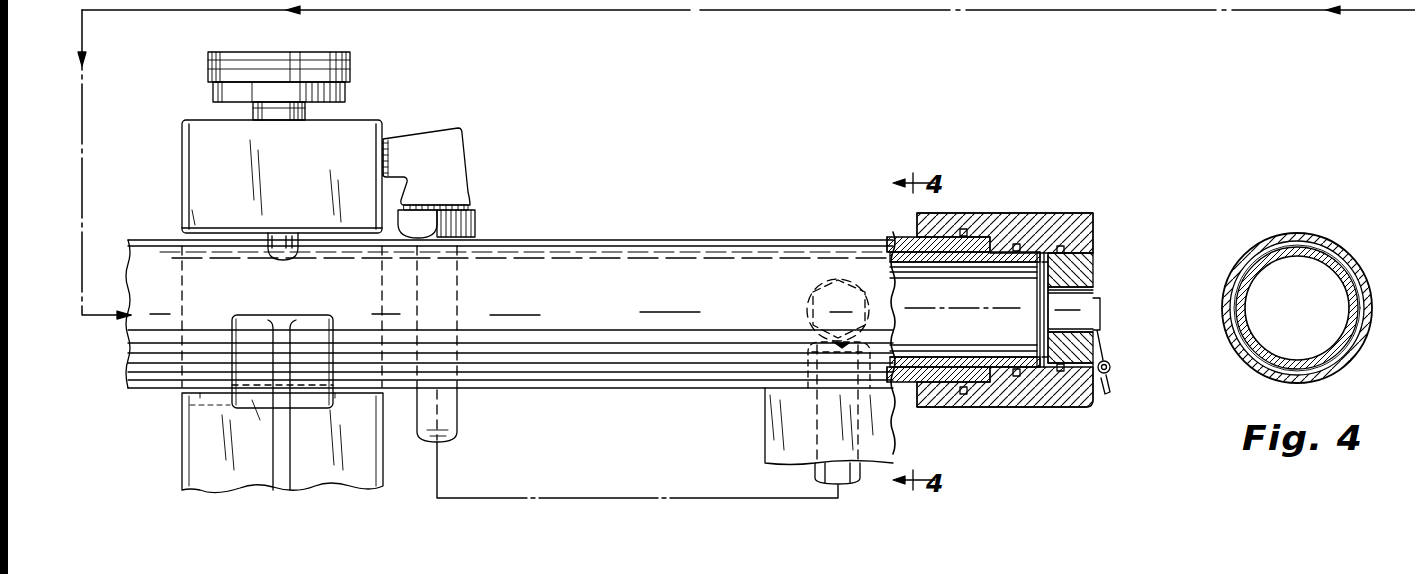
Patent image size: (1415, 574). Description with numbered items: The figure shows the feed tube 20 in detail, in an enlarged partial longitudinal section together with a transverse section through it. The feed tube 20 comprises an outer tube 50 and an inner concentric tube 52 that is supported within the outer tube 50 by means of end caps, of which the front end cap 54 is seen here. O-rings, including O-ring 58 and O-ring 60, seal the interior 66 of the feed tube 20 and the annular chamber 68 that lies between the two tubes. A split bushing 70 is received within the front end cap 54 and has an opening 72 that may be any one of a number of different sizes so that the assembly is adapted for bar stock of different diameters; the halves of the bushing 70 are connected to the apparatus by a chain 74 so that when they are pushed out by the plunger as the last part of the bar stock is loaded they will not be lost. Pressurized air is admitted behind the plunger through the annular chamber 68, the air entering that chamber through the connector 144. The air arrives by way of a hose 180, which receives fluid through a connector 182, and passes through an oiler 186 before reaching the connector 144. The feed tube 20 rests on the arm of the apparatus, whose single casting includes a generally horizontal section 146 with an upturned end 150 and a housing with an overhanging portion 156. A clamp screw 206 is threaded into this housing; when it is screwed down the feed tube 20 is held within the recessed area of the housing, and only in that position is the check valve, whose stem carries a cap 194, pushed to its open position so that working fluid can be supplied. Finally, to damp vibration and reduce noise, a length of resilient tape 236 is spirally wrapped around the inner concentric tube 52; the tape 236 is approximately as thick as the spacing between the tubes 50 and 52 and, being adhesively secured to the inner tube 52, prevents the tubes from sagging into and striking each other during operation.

In FIG. 3, the feed tube 20 is at (600, 237).
In FIG. 3, the outer tube 50 is at (890, 240).
In FIG. 4, the outer tube 50 is at (1348, 262).
In FIG. 3, the inner concentric tube 52 is at (920, 356).
In FIG. 4, the inner concentric tube 52 is at (1358, 322).
In FIG. 3, the front end cap 54 is at (1066, 213).
In FIG. 3, the O-ring 58 is at (1020, 243).
In FIG. 3, the O-ring 60 is at (968, 229).
In FIG. 3, the interior 66 is at (1006, 337).
In FIG. 4, the interior 66 is at (1310, 313).
In FIG. 4, the annular chamber 68 is at (1252, 255).
In FIG. 3, the split bushing 70 is at (1090, 270).
In FIG. 3, the opening 72 is at (1088, 295).
In FIG. 3, the chain 74 is at (1108, 388).
In FIG. 3, the connector 144 is at (812, 286).
In FIG. 3, the generally horizontal section 146 is at (374, 404).
In FIG. 3, the upturned end 150 is at (255, 315).
In FIG. 3, the overhanging portion 156 is at (184, 190).
In FIG. 3, the hose 180 is at (457, 412).
In FIG. 3, the connector 182 is at (454, 162).
In FIG. 3, the oiler 186 is at (766, 432).
In FIG. 3, the cap 194 is at (305, 118).
In FIG. 3, the clamp screw 206 is at (352, 75).
In FIG. 3, the resilient tape 236 is at (900, 262).